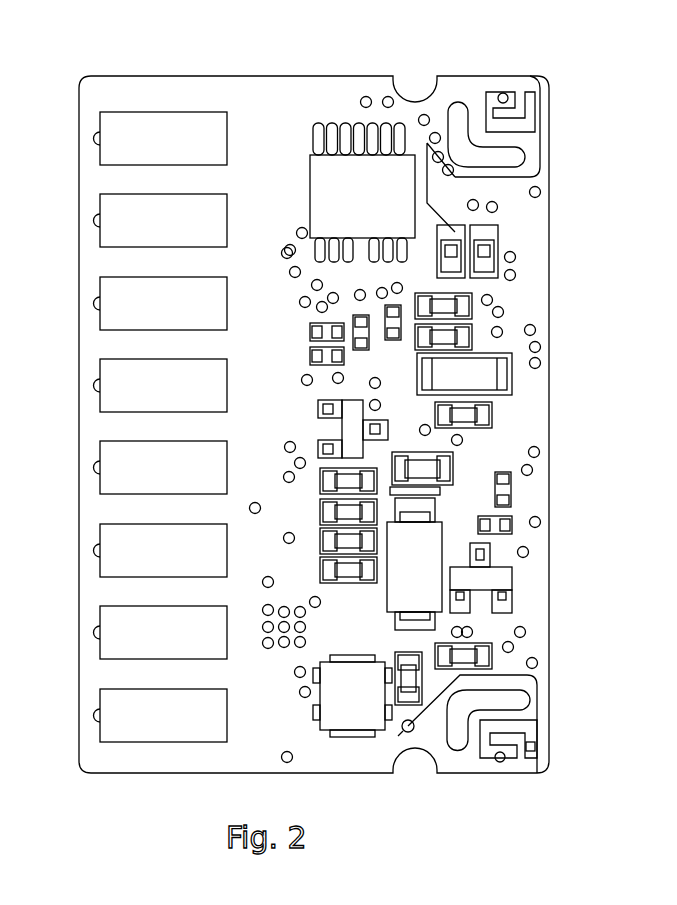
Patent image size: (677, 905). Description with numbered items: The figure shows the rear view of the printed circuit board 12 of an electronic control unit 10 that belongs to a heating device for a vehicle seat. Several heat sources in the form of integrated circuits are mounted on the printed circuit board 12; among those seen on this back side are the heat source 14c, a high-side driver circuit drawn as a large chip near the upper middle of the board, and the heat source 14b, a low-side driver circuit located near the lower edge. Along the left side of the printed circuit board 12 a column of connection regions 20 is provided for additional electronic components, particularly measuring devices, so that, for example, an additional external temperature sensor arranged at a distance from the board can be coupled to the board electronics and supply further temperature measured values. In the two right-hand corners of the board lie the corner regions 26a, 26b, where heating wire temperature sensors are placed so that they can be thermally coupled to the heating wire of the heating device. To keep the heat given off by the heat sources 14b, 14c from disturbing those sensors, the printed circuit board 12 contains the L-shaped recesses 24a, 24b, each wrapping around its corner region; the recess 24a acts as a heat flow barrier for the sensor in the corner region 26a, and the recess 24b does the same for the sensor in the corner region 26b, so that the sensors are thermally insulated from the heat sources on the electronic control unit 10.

The electronic control unit 10 is at (558, 134).
The printed circuit board 12 is at (528, 612).
The heat source 14b is at (357, 708).
The heat source 14c is at (337, 193).
The connection regions 20 is at (133, 560).
The L-shaped recess 24a is at (455, 740).
The L-shaped recess 24b is at (548, 188).
The corner region 26a is at (537, 747).
The corner region 26b is at (523, 92).